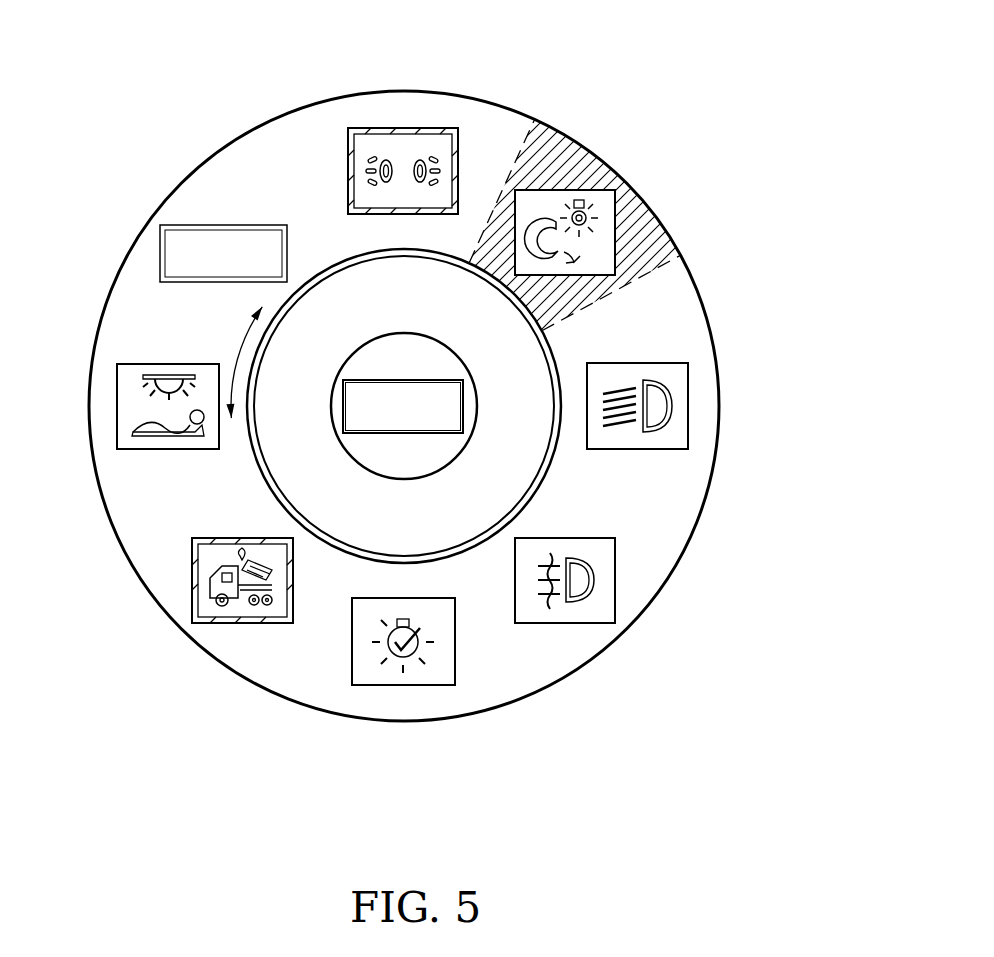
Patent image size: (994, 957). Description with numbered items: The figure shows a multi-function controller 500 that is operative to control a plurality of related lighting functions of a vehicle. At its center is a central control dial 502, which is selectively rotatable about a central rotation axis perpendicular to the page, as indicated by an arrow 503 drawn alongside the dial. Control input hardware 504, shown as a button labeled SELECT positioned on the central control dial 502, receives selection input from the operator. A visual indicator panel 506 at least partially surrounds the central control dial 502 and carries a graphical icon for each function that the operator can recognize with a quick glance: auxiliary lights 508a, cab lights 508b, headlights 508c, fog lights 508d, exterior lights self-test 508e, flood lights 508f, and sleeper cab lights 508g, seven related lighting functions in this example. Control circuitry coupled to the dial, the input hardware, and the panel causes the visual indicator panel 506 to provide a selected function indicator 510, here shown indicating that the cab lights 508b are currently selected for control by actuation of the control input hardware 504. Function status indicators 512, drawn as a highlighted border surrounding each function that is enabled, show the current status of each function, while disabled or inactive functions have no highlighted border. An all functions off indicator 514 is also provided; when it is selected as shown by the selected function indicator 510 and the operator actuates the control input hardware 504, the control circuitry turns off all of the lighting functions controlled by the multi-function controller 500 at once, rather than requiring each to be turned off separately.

The multi-function controller 500 is at (732, 74).
The central control dial 502 is at (553, 357).
The arrow 503 is at (242, 352).
The control input hardware 504 is at (430, 433).
The visual indicator panel 506 is at (273, 165).
The auxiliary lights 508a is at (405, 150).
The cab lights 508b is at (573, 190).
The headlights 508c is at (688, 415).
The fog lights 508d is at (615, 585).
The exterior lights self-test 508e is at (418, 685).
The flood lights 508f is at (208, 560).
The sleeper cab lights 508g is at (131, 400).
The selected function indicator 510 is at (650, 235).
The function status indicators 512 is at (348, 143).
The all functions off indicator 514 is at (203, 223).